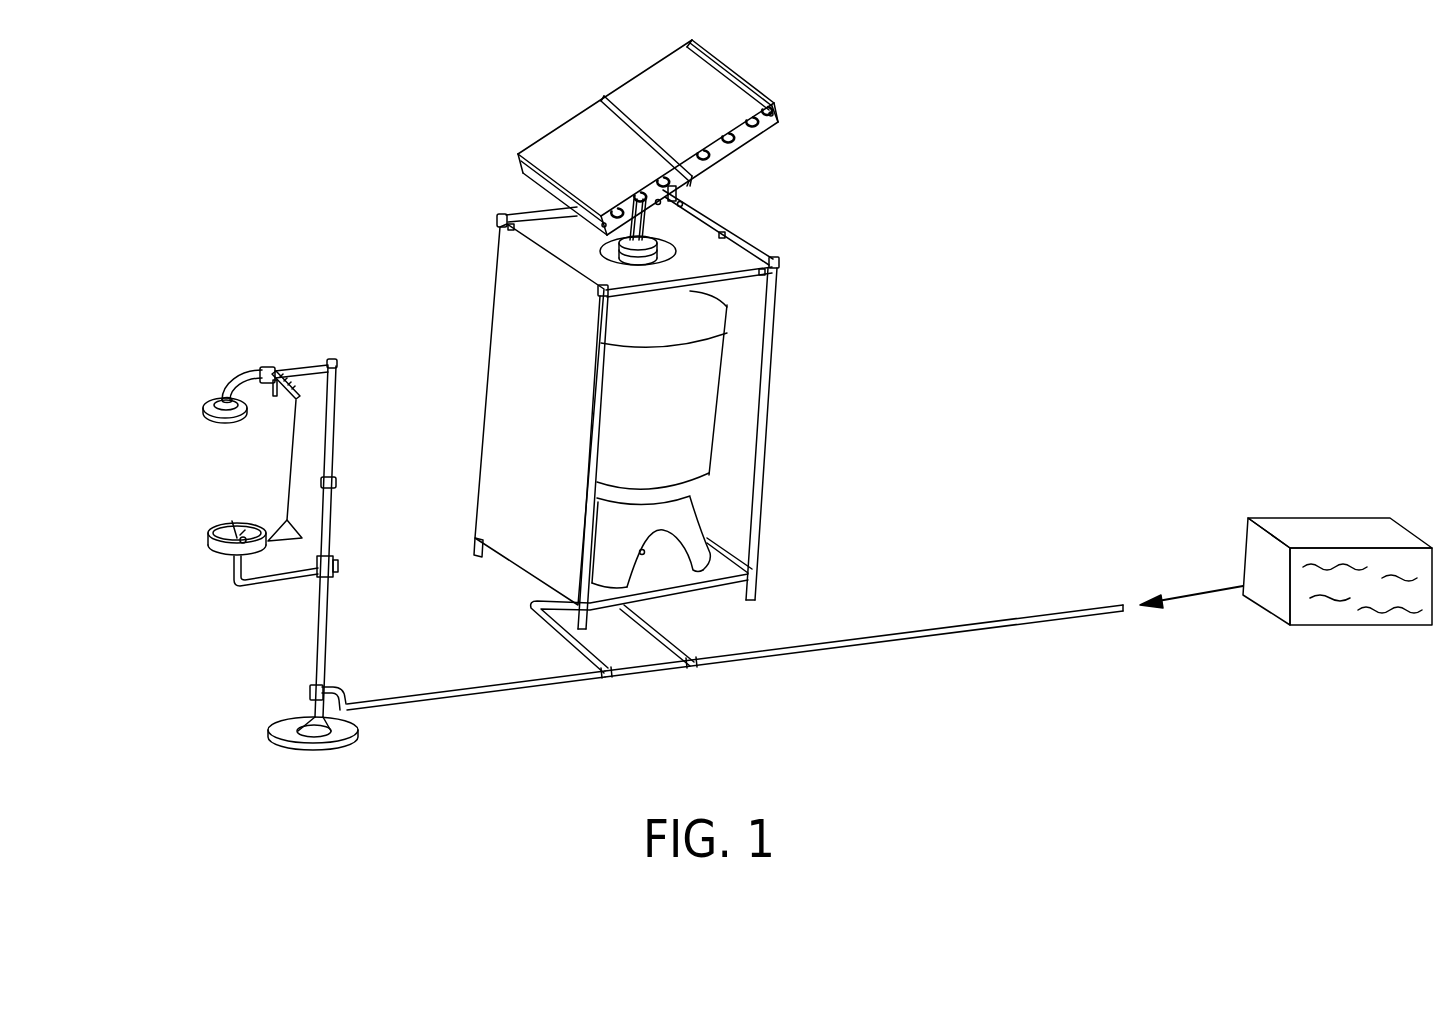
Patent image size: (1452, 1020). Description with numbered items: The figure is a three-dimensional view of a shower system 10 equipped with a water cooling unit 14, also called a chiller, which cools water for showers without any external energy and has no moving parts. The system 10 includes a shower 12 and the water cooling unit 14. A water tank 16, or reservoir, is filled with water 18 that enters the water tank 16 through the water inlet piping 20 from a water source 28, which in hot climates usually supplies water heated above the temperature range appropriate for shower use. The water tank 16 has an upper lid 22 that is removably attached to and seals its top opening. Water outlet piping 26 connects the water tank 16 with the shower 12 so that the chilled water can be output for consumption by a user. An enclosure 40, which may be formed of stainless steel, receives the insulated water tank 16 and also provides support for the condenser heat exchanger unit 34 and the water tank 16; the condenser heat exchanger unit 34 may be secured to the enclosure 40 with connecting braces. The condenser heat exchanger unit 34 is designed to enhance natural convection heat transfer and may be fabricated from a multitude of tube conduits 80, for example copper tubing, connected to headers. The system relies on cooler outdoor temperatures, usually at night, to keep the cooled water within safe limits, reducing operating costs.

The system 10 is at (378, 166).
The shower 12 is at (186, 494).
The water cooling unit 14 is at (832, 362).
The water tank 16 is at (690, 447).
The water 18 is at (1198, 592).
The water inlet piping 20 is at (742, 664).
The upper lid 22 is at (650, 243).
The water outlet piping 26 is at (487, 687).
The water source 28 is at (1350, 547).
The condenser heat exchanger unit 34 is at (743, 78).
The enclosure 40 is at (760, 543).
The tube conduits 80 is at (750, 127).